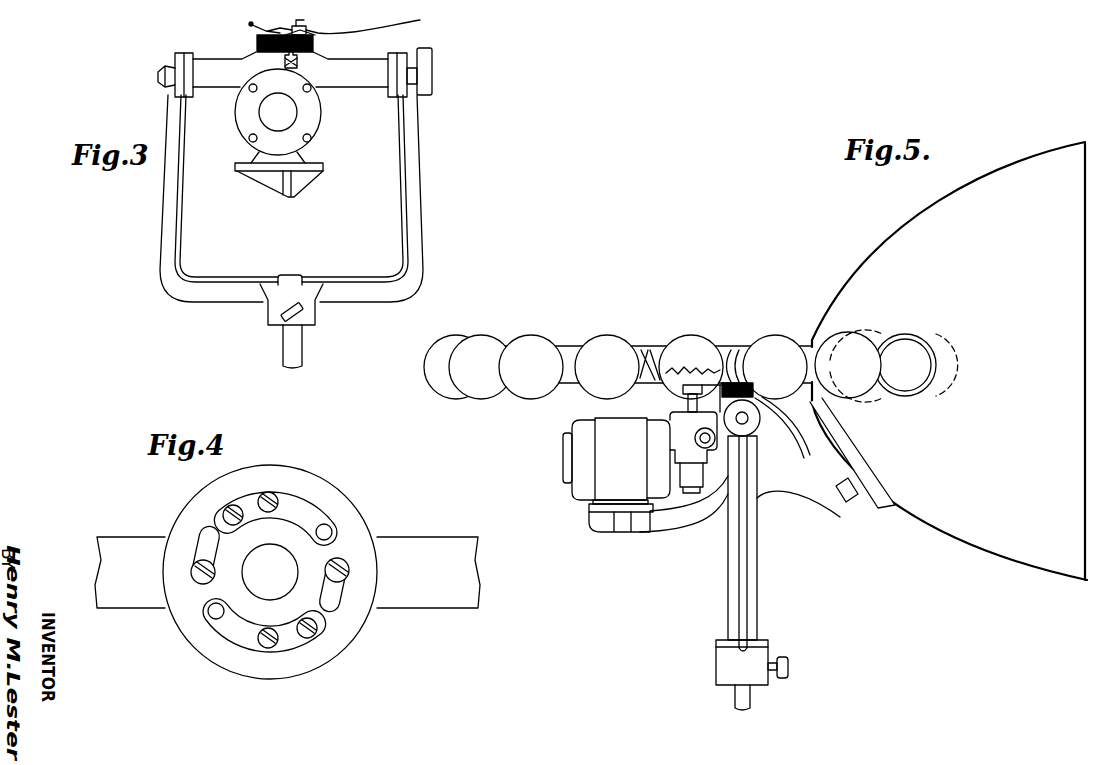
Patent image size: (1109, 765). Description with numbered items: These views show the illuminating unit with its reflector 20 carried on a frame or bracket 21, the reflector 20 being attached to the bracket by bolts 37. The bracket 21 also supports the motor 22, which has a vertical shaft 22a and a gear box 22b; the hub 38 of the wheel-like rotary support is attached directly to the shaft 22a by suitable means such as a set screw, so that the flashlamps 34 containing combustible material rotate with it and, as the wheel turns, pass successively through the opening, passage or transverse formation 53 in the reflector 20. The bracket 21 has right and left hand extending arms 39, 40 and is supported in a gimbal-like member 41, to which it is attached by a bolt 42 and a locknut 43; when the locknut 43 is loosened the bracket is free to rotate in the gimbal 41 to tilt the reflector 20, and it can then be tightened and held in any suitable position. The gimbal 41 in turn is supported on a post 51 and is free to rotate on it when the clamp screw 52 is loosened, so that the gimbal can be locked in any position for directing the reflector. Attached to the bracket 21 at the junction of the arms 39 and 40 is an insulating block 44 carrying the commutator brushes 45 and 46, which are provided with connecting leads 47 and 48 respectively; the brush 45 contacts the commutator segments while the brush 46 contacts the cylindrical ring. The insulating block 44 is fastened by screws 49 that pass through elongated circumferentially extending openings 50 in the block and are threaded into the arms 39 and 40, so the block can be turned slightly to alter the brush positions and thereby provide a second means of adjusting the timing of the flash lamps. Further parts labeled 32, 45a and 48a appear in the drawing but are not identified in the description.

In FIG. 5, the reflector 20 is at (1018, 170).
In FIG. 3, the frame 21 is at (300, 185).
In FIG. 5, the frame 21 is at (795, 490).
In FIG. 3, the motor 22 is at (315, 127).
In FIG. 5, the motor 22 is at (607, 487).
In FIG. 5, the vertical shaft 22a is at (688, 405).
In FIG. 5, the gear box 22b is at (698, 437).
In FIG. 5, the lamp track rail 32 is at (652, 345).
In FIG. 5, the flashlamps 34 is at (484, 348).
In FIG. 5, the bolts 37 is at (843, 502).
In FIG. 5, the hub 38 is at (683, 388).
In FIG. 3, the right hand extending arm 39 is at (358, 76).
In FIG. 4, the right hand extending arm 39 is at (432, 600).
In FIG. 3, the left hand extending arm 40 is at (228, 78).
In FIG. 4, the left hand extending arm 40 is at (135, 600).
In FIG. 3, the gimbal-like member 41 is at (423, 210).
In FIG. 5, the gimbal-like member 41 is at (757, 560).
In FIG. 3, the bolt 42 is at (158, 76).
In FIG. 3, the locknut 43 is at (432, 72).
In FIG. 5, the locknut 43 is at (746, 423).
In FIG. 3, the insulating block 44 is at (257, 43).
In FIG. 4, the insulating block 44 is at (358, 530).
In FIG. 5, the insulating block 44 is at (740, 350).
In FIG. 3, the commutator brush 45 is at (250, 24).
In FIG. 4, the commutator brush 45 is at (232, 635).
In FIG. 4, the screw 45a is at (270, 648).
In FIG. 3, the commutator brush 46 is at (306, 24).
In FIG. 4, the commutator brush 46 is at (313, 513).
In FIG. 4, the connecting lead 47 is at (310, 638).
In FIG. 4, the connecting lead 48 is at (235, 505).
In FIG. 4, the screw 48a is at (272, 492).
In FIG. 4, the screws 49 is at (191, 572).
In FIG. 4, the elongated circumferentially extending openings 50 is at (203, 535).
In FIG. 3, the post 51 is at (302, 348).
In FIG. 5, the post 51 is at (750, 698).
In FIG. 3, the clamp screw 52 is at (302, 314).
In FIG. 5, the clamp screw 52 is at (788, 667).
In FIG. 5, the opening in the reflector 53 is at (905, 334).